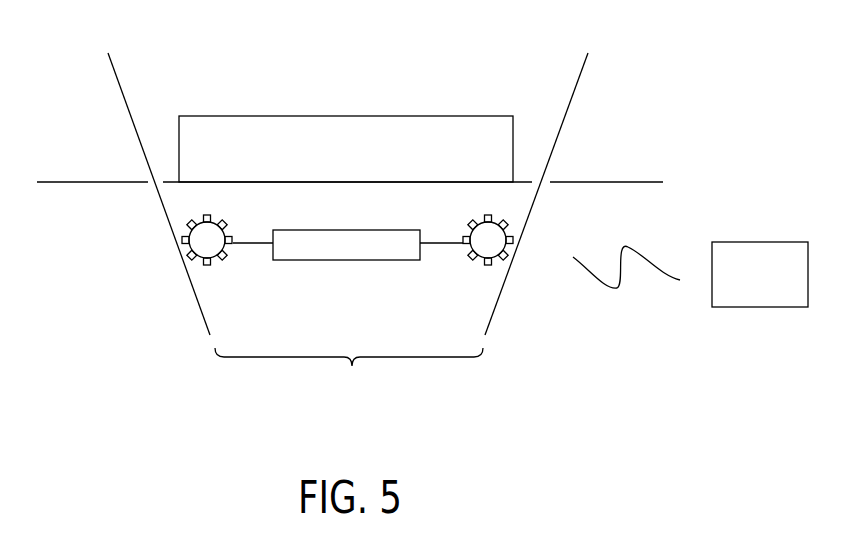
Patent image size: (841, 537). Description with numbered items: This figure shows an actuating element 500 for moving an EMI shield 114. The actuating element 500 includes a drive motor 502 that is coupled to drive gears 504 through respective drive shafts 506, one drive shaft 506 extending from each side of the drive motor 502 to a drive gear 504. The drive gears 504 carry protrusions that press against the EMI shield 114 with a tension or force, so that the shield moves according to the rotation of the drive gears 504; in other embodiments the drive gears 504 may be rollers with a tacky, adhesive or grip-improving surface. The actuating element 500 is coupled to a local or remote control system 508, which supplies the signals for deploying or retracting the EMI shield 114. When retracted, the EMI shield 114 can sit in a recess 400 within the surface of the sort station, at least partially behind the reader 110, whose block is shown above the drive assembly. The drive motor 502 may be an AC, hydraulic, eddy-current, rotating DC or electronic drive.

The EMI shield 114 is at (122, 92).
The reader 110 is at (337, 115).
The drive shafts 506 is at (248, 242).
The drive gears 504 is at (217, 262).
The drive motor 502 is at (350, 260).
The control system 508 is at (772, 288).
The actuating element 500 is at (349, 379).
The recess 400 is at (98, 252).